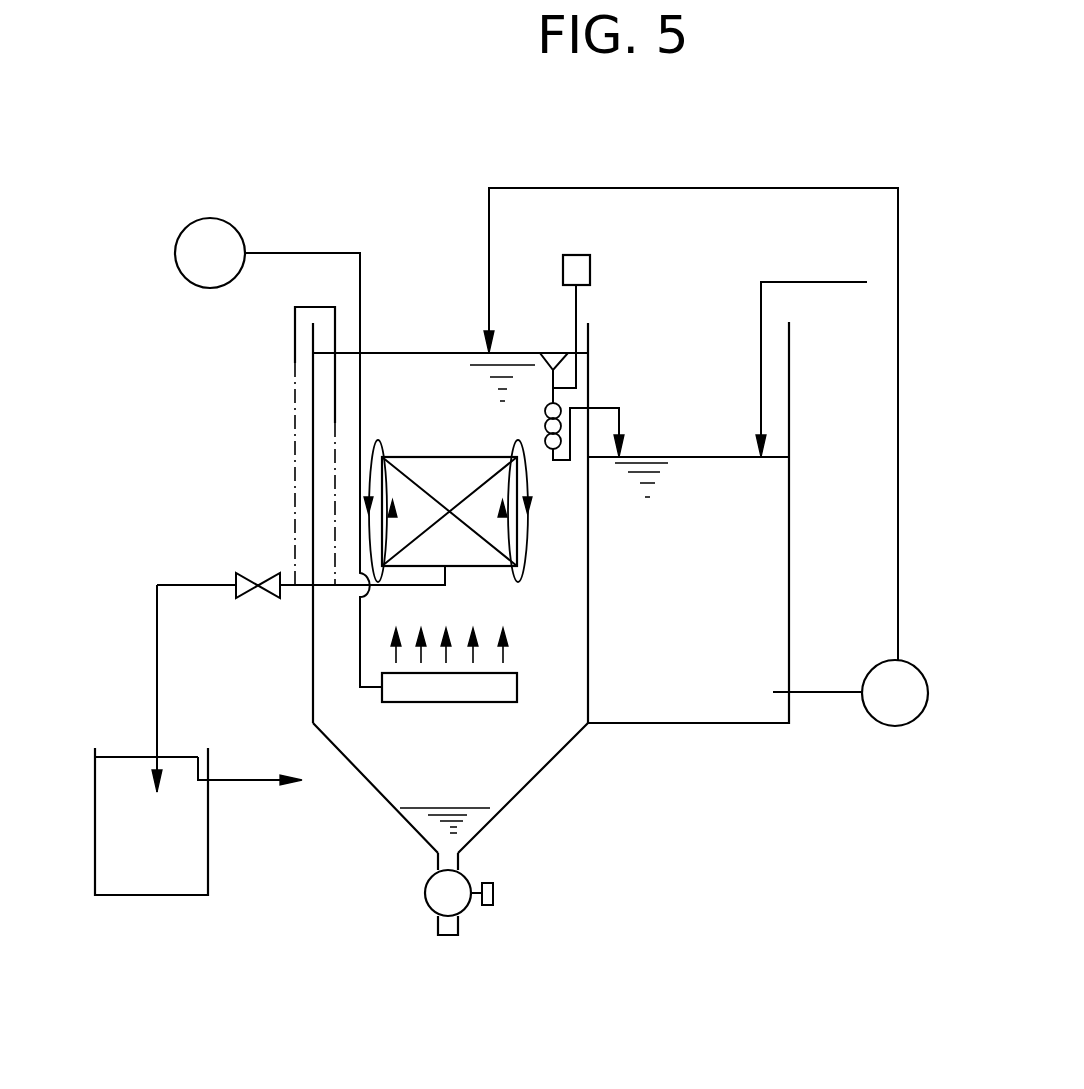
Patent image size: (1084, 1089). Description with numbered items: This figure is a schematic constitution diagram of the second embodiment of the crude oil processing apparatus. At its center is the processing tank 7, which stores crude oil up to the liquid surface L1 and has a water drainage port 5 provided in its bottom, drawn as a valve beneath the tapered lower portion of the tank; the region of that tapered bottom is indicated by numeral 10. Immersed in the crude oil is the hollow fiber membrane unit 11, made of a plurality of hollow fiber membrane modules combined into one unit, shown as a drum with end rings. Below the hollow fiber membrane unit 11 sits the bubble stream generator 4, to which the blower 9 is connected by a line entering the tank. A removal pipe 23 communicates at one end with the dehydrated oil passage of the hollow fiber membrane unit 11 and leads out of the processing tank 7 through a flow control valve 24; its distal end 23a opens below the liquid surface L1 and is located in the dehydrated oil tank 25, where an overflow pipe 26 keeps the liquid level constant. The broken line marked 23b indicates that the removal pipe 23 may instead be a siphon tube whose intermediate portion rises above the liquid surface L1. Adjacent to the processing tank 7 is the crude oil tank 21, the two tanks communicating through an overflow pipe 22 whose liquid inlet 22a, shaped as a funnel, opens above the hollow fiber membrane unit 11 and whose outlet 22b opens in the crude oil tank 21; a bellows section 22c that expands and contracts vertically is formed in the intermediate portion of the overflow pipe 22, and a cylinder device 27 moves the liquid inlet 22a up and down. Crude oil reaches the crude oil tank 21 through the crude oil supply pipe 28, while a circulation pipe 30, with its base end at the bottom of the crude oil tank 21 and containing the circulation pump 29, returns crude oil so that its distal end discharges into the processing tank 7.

The bubble stream generator 4 is at (495, 702).
The water drainage port 5 is at (445, 936).
The processing tank 7 is at (310, 463).
The blower 9 is at (240, 228).
The precipitate hopper 10 is at (407, 823).
The hollow fiber membrane unit 11 is at (517, 543).
The crude oil tank 21 is at (790, 545).
The overflow pipe 22 is at (600, 408).
The liquid inlet 22a is at (553, 352).
The outlet 22b is at (625, 455).
The bellows section 22c is at (543, 412).
The removal pipe 23 is at (177, 585).
The distal end 23a is at (157, 792).
The siphon tube 23b is at (293, 340).
The flow control valve 24 is at (243, 577).
The dehydrated oil tank 25 is at (208, 878).
The overflow pipe 26 is at (240, 780).
The cylinder device 27 is at (592, 270).
The crude oil supply pipe 28 is at (795, 282).
The circulation pump 29 is at (905, 660).
The circulation pipe 30 is at (898, 360).
The liquid surface L1 is at (388, 353).